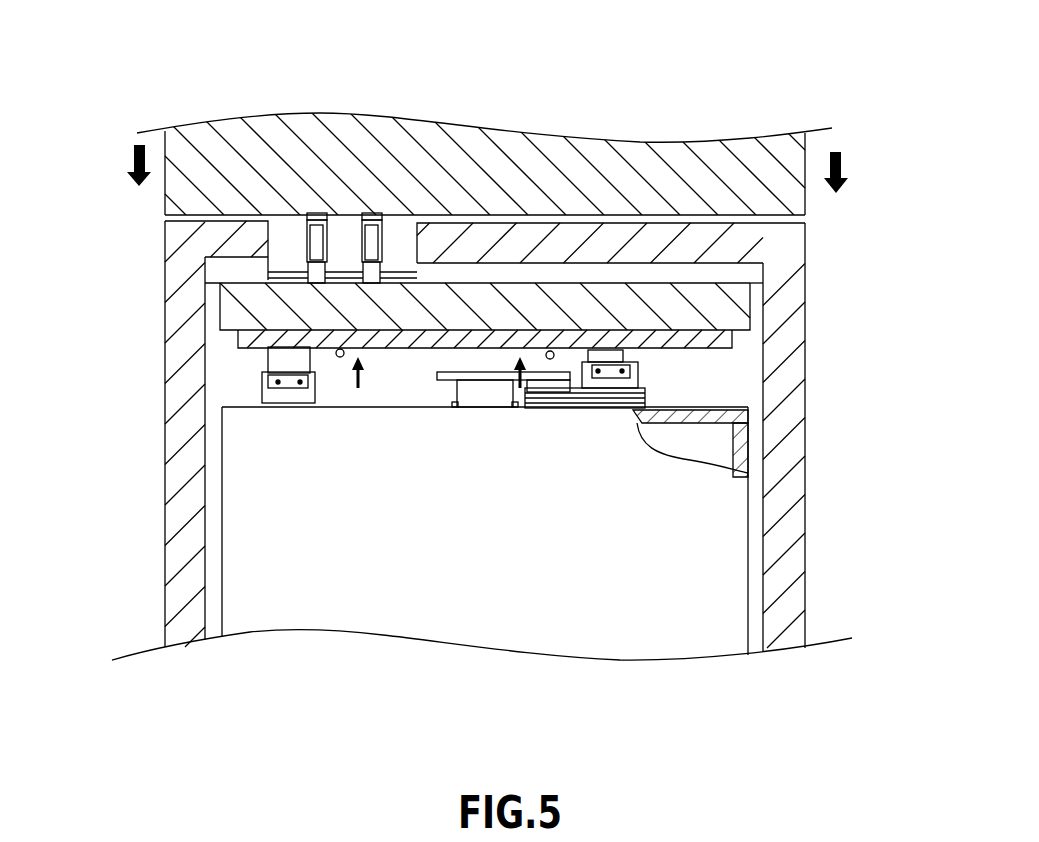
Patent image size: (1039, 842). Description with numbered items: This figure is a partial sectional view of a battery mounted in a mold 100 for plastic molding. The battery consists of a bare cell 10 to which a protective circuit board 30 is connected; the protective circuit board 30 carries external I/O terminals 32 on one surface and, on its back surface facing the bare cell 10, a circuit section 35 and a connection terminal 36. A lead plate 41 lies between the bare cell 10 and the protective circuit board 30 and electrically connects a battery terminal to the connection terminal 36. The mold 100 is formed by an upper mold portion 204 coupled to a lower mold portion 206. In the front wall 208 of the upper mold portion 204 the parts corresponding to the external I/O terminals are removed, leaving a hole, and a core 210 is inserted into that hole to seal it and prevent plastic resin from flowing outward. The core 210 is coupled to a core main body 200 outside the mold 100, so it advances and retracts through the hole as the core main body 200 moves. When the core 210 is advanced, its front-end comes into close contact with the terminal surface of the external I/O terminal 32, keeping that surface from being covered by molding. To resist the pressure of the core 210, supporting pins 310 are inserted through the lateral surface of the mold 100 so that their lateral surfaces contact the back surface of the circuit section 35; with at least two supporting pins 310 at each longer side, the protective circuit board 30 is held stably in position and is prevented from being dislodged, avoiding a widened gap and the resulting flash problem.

The bare cell 10 is at (587, 637).
The protective circuit board 30 is at (207, 275).
The external I/O terminal 32 is at (415, 281).
The circuit section 35 is at (705, 349).
The connection terminal 36 is at (277, 363).
The lead plate 41 is at (285, 392).
The mold 100 is at (790, 483).
The core main body 200 is at (592, 157).
The upper mold portion 204 is at (820, 305).
The lower mold portion 206 is at (820, 568).
The front wall 208 is at (705, 222).
The core 210 is at (283, 243).
The supporting pin 310 is at (549, 359).